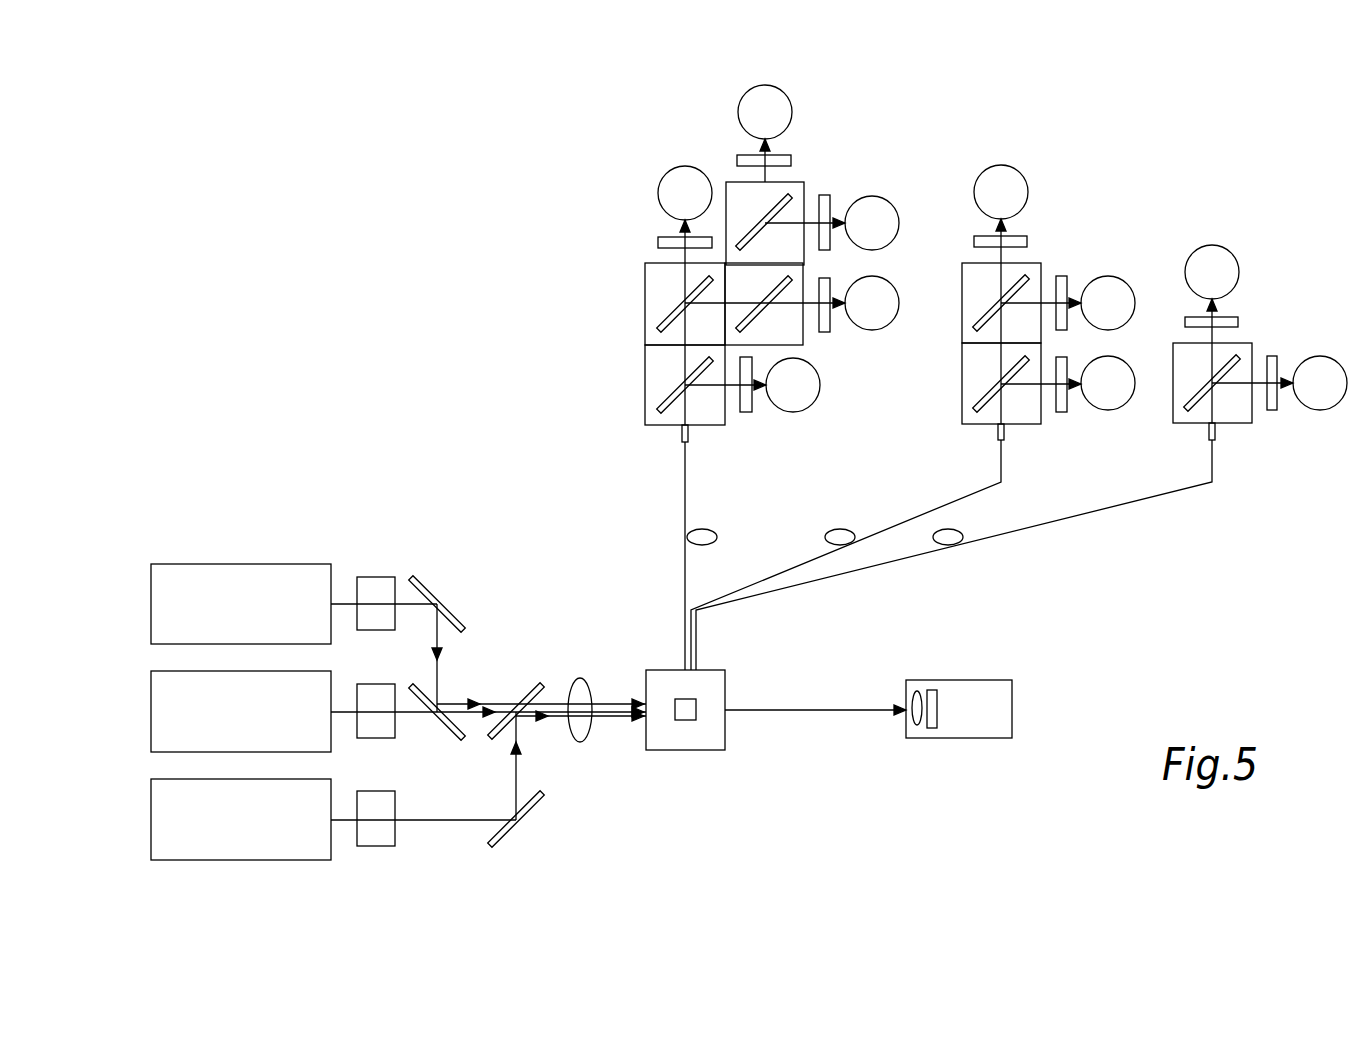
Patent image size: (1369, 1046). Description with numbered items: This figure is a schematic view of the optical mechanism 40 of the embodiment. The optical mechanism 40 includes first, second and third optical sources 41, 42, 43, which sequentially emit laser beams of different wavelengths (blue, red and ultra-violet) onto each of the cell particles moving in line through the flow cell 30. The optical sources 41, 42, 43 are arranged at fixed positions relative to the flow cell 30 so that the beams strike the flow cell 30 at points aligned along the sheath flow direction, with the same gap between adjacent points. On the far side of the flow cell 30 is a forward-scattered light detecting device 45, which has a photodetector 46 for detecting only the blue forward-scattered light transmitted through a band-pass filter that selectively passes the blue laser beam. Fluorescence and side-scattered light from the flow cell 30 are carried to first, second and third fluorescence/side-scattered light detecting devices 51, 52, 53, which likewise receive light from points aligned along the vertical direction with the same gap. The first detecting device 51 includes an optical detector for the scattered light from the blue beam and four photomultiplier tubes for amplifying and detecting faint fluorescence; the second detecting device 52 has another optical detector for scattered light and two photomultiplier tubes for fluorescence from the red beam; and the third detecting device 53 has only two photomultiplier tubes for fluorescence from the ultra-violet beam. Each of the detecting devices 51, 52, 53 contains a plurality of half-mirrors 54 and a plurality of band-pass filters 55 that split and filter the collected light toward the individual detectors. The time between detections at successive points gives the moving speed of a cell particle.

The flow cell 30 is at (685, 720).
The optical mechanism 40 is at (416, 310).
The first optical source 41 is at (151, 600).
The second optical source 42 is at (151, 708).
The third optical source 43 is at (151, 817).
The forward-scattered light detecting device 45 is at (995, 738).
The photodetector 46 is at (932, 728).
The first fluorescence/side-scattered light detecting device 51 is at (850, 112).
The second fluorescence/side-scattered light detecting device 52 is at (1074, 127).
The third fluorescence detecting device 53 is at (1299, 142).
The half-mirror 54 is at (665, 398).
The band-pass filter 55 is at (752, 405).